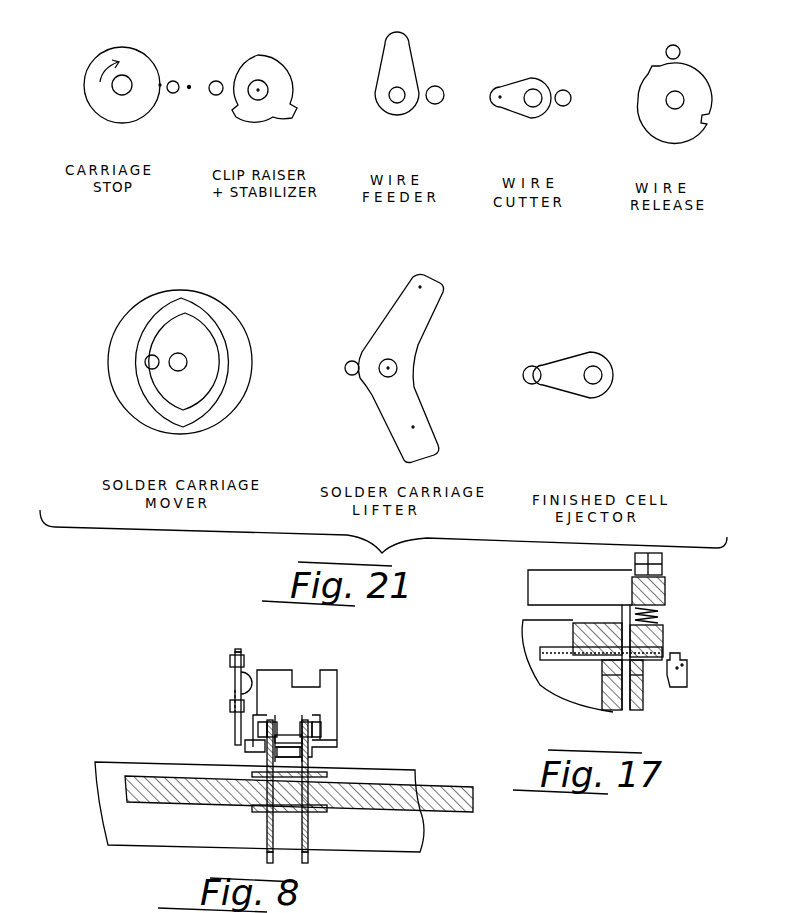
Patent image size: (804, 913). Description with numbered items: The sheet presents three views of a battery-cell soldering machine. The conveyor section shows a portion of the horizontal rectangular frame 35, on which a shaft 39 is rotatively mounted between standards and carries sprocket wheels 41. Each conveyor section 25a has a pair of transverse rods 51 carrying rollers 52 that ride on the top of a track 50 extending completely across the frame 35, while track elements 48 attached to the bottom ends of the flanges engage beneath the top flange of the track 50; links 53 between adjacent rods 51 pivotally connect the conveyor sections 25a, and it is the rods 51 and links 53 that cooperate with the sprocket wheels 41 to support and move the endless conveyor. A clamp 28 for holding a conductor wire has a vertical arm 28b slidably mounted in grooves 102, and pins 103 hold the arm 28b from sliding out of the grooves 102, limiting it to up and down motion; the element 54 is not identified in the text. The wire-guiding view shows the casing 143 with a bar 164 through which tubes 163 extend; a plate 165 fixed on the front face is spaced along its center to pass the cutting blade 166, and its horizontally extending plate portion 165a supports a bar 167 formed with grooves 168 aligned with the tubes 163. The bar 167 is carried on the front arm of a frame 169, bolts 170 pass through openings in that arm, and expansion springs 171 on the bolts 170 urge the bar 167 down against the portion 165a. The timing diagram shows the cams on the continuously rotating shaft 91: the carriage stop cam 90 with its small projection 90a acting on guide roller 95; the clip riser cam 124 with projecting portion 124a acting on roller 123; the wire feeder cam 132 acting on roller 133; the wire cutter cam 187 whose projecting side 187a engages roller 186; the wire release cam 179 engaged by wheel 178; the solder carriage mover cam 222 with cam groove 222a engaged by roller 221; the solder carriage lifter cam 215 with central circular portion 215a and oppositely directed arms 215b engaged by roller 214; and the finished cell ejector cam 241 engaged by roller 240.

In FIG. 21, the cam 90 is at (100, 63).
In FIG. 21, the small projection 90a is at (164, 80).
In FIG. 21, the shaft 91 is at (120, 83).
In FIG. 21, the guide roller 95 is at (171, 93).
In FIG. 21, the roller 123 is at (217, 81).
In FIG. 21, the clip riser cam 124 is at (240, 70).
In FIG. 21, the projecting portion 124a is at (277, 123).
In FIG. 21, the cam 132 is at (398, 53).
In FIG. 21, the roller 133 is at (433, 104).
In FIG. 21, the cam 187 is at (543, 82).
In FIG. 21, the projecting side 187a is at (503, 95).
In FIG. 21, the roller 186 is at (563, 106).
In FIG. 21, the wheel 178 is at (677, 50).
In FIG. 21, the wire release cam 179 is at (697, 93).
In FIG. 21, the cam 222 is at (143, 318).
In FIG. 21, the cam groove 222a is at (228, 342).
In FIG. 21, the roller 221 is at (146, 360).
In FIG. 21, the cam 215 is at (430, 303).
In FIG. 21, the central substantially circular portion 215a is at (402, 357).
In FIG. 21, the oppositely directed arms 215b is at (420, 287).
In FIG. 21, the roller 214 is at (347, 373).
In FIG. 21, the roller 240 is at (533, 366).
In FIG. 21, the cam 241 is at (583, 365).
In FIG. 8, the frame 35 is at (108, 822).
In FIG. 8, the shaft 39 is at (455, 787).
In FIG. 8, the sprocket wheels 41 is at (267, 830).
In FIG. 8, the conveyor section 25a is at (327, 678).
In FIG. 17, the conveyor section 25a is at (677, 668).
In FIG. 8, the track elements 48 is at (247, 752).
In FIG. 8, the transverse rods 51 is at (293, 727).
In FIG. 8, the rollers 52 is at (258, 722).
In FIG. 8, the links 53 is at (267, 728).
In FIG. 8, the nut 54 is at (285, 743).
In FIG. 8, the track 50 is at (287, 760).
In FIG. 8, the clamp 28 is at (238, 653).
In FIG. 17, the clamp 28 is at (678, 655).
In FIG. 8, the vertical arm 28b is at (235, 737).
In FIG. 8, the pins 103 is at (230, 662).
In FIG. 8, the grooves 102 is at (230, 665).
In FIG. 17, the frame 169 is at (547, 577).
In FIG. 17, the bolts 170 is at (660, 568).
In FIG. 17, the expansion springs 171 is at (660, 617).
In FIG. 17, the bar 167 is at (662, 632).
In FIG. 17, the bar 164 is at (607, 623).
In FIG. 17, the grooves 168 is at (647, 667).
In FIG. 17, the casing 143 is at (558, 668).
In FIG. 17, the tubes 163 is at (552, 647).
In FIG. 17, the cutting blade 166 is at (622, 708).
In FIG. 17, the plate 165 is at (635, 708).
In FIG. 17, the horizontally extending plate portion 165a is at (682, 665).